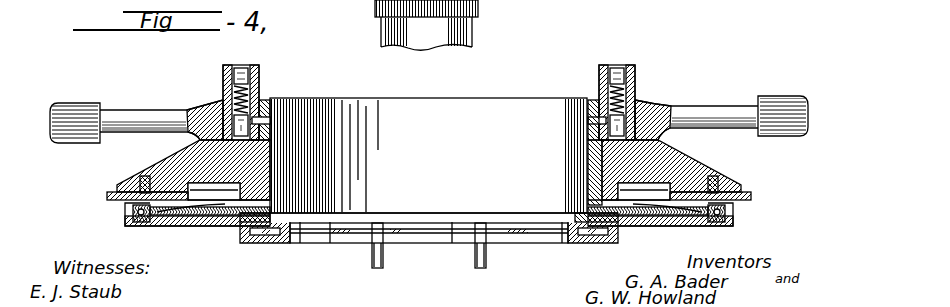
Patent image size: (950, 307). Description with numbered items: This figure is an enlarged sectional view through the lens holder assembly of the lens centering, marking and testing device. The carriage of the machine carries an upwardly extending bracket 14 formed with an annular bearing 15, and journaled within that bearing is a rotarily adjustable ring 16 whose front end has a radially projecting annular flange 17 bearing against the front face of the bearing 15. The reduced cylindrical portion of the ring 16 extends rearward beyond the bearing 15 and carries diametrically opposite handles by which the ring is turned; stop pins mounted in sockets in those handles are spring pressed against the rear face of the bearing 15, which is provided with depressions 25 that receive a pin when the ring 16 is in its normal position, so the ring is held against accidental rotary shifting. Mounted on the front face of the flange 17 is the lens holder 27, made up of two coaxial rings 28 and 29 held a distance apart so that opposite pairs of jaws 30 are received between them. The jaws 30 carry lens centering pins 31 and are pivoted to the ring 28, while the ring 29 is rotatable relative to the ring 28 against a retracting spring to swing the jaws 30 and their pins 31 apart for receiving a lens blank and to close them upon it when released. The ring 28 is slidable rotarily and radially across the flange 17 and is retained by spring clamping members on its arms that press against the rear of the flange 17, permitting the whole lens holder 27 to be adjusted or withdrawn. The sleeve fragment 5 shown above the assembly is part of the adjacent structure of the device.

The upper casing section 5 is at (375, 3).
The bracket 14 is at (590, 146).
The annular bearing 15 is at (670, 153).
The rotarily adjustable ring 16 is at (310, 100).
The annular flange 17 is at (568, 213).
The depressions 25 is at (205, 143).
The lens holder 27 is at (330, 243).
The ring 28 is at (432, 218).
The ring 29 is at (604, 241).
The jaws 30 is at (302, 243).
The lens centering pins 31 is at (378, 268).